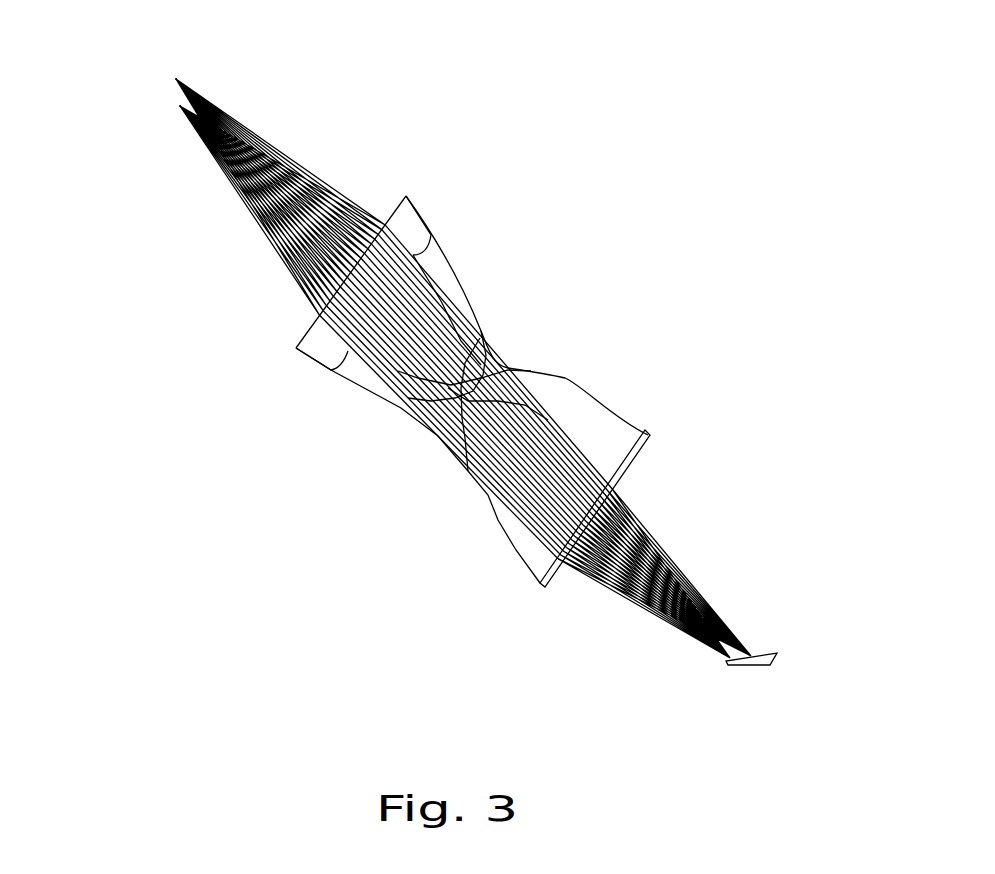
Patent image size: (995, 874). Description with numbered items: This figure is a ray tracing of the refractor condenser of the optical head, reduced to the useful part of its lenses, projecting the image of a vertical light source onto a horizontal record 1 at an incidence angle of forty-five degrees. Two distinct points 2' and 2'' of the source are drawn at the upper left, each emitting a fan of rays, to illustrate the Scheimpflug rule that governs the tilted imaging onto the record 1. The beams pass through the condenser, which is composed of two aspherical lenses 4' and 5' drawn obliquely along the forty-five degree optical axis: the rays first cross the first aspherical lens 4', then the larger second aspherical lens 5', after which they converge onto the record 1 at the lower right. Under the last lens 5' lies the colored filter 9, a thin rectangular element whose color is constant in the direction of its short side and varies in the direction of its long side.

The record 1 is at (757, 636).
The first source point 2' is at (267, 53).
The second source point 2'' is at (118, 145).
The first aspherical lens 4' is at (324, 313).
The second aspherical lens 5' is at (472, 394).
The colored filter 9 is at (544, 588).